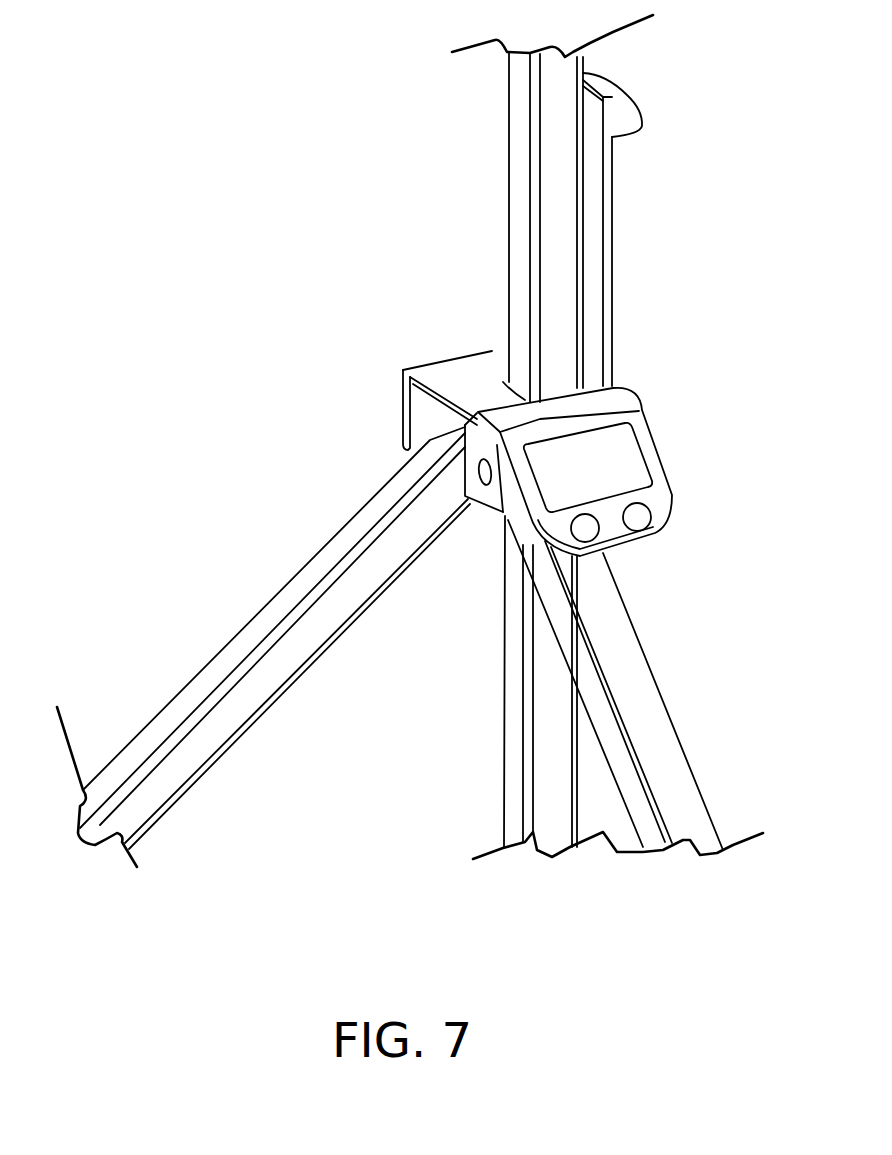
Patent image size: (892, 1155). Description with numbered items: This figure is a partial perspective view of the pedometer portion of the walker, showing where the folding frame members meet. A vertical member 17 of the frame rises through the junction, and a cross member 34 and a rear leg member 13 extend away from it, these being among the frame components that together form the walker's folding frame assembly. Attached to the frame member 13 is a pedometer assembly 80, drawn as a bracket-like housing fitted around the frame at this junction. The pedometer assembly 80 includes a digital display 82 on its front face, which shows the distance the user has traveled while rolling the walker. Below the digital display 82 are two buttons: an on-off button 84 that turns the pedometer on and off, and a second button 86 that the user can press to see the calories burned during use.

The vertical member 17 is at (552, 288).
The cross member 34 is at (302, 572).
The rear leg member 13 is at (643, 708).
The pedometer assembly 80 is at (665, 377).
The digital display 82 is at (600, 445).
The on-off button 84 is at (588, 535).
The button 86 is at (647, 520).